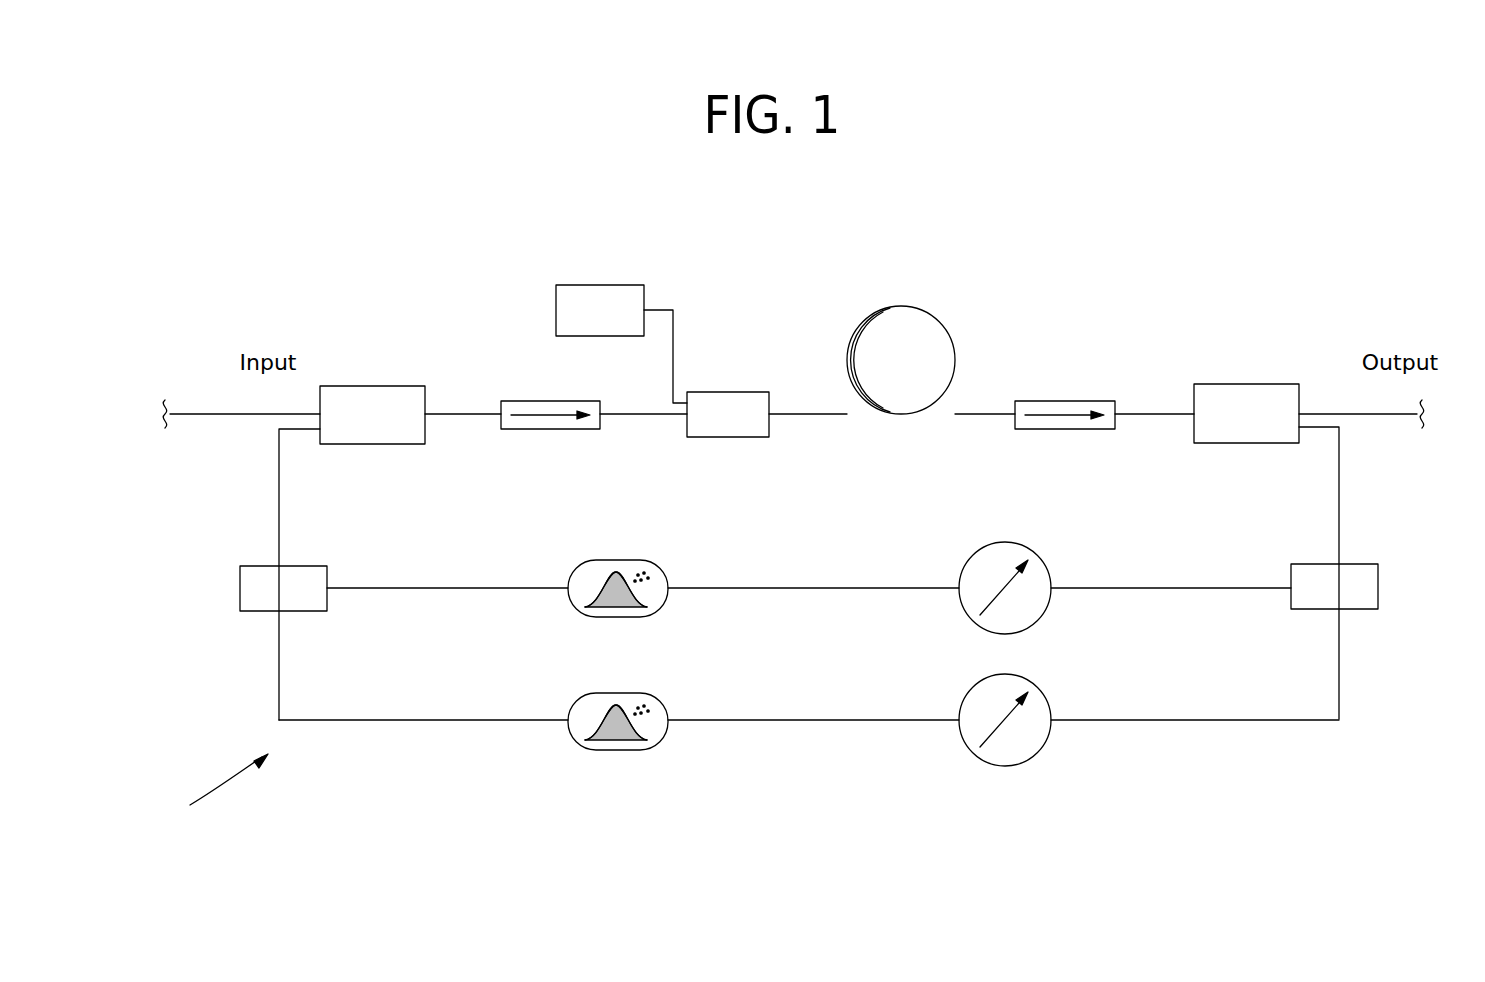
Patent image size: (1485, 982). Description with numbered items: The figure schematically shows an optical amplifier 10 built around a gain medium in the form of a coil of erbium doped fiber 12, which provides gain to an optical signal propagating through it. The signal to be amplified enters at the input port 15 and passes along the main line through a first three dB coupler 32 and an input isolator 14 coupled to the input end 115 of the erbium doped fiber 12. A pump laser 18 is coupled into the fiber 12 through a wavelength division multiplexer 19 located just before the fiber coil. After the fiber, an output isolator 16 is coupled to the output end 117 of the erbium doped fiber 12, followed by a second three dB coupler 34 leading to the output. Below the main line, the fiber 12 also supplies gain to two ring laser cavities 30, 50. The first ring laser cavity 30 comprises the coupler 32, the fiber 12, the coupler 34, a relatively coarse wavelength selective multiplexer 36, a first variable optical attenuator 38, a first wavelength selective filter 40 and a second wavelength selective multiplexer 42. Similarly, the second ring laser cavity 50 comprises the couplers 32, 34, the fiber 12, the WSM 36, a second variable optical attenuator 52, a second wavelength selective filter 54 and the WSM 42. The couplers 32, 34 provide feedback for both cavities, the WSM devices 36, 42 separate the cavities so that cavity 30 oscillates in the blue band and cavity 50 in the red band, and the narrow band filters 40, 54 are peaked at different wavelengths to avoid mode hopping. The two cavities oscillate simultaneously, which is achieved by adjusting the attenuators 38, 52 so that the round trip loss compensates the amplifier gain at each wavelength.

The optical amplifier 10 is at (211, 788).
The erbium doped fiber 12 is at (940, 318).
The input isolator 14 is at (505, 401).
The input port 15 is at (181, 413).
The output isolator 16 is at (1103, 401).
The pump laser 18 is at (600, 285).
The wavelength division multiplexer 19 is at (730, 392).
The first ring laser cavity 30 is at (787, 680).
The 3 dB coupler 32 is at (370, 386).
The 3 dB coupler 34 is at (1245, 384).
The wavelength selective multiplexer 36 is at (1378, 587).
The first variable optical attenuator 38 is at (998, 766).
The first wavelength selective filter 40 is at (618, 750).
The wavelength selective multiplexer 42 is at (258, 611).
The second ring laser cavity 50 is at (787, 532).
The second variable optical attenuator 52 is at (1000, 541).
The second wavelength selective filter 54 is at (662, 565).
The input end 115 is at (808, 413).
The output end 117 is at (980, 413).